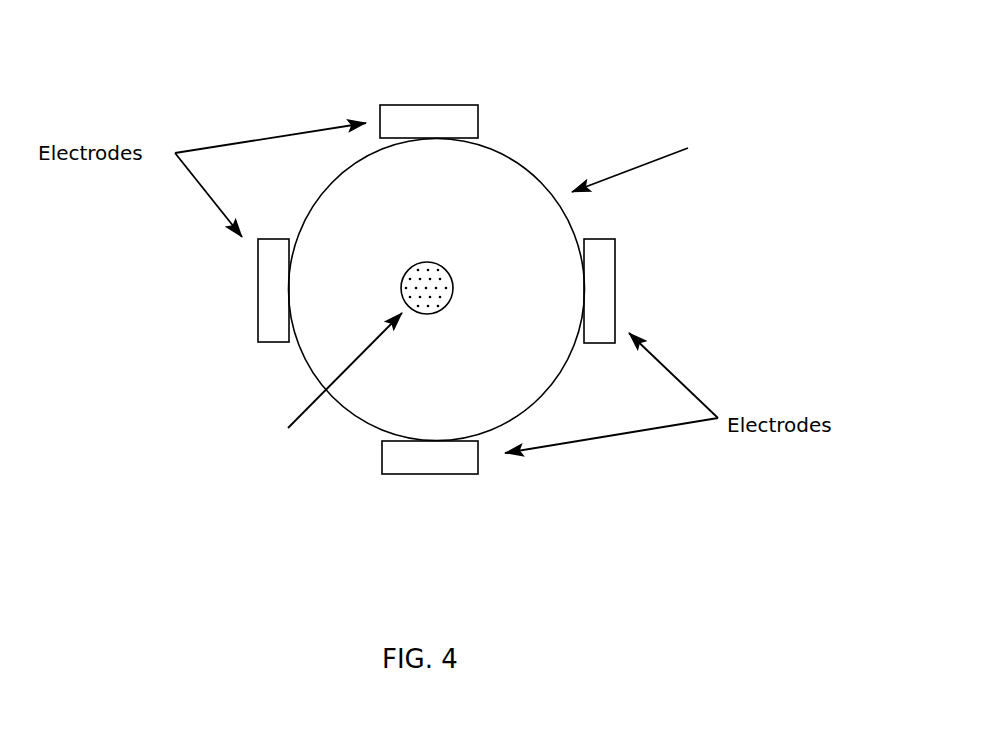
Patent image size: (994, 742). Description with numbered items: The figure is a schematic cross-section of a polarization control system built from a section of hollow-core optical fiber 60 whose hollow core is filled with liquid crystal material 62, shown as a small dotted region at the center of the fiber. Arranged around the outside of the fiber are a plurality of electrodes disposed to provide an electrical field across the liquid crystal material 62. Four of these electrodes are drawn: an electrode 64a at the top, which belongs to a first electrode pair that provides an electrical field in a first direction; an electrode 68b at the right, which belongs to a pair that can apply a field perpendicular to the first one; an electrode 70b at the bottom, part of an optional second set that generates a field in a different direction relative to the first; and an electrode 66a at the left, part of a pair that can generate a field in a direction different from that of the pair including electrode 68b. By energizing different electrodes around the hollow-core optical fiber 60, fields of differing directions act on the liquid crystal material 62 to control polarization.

The hollow-core optical fiber 60 is at (532, 168).
The liquid crystal material 62 is at (433, 260).
The electrode 64a is at (430, 103).
The electrode 66a is at (257, 292).
The electrode 68b is at (615, 277).
The electrode 70b is at (430, 475).